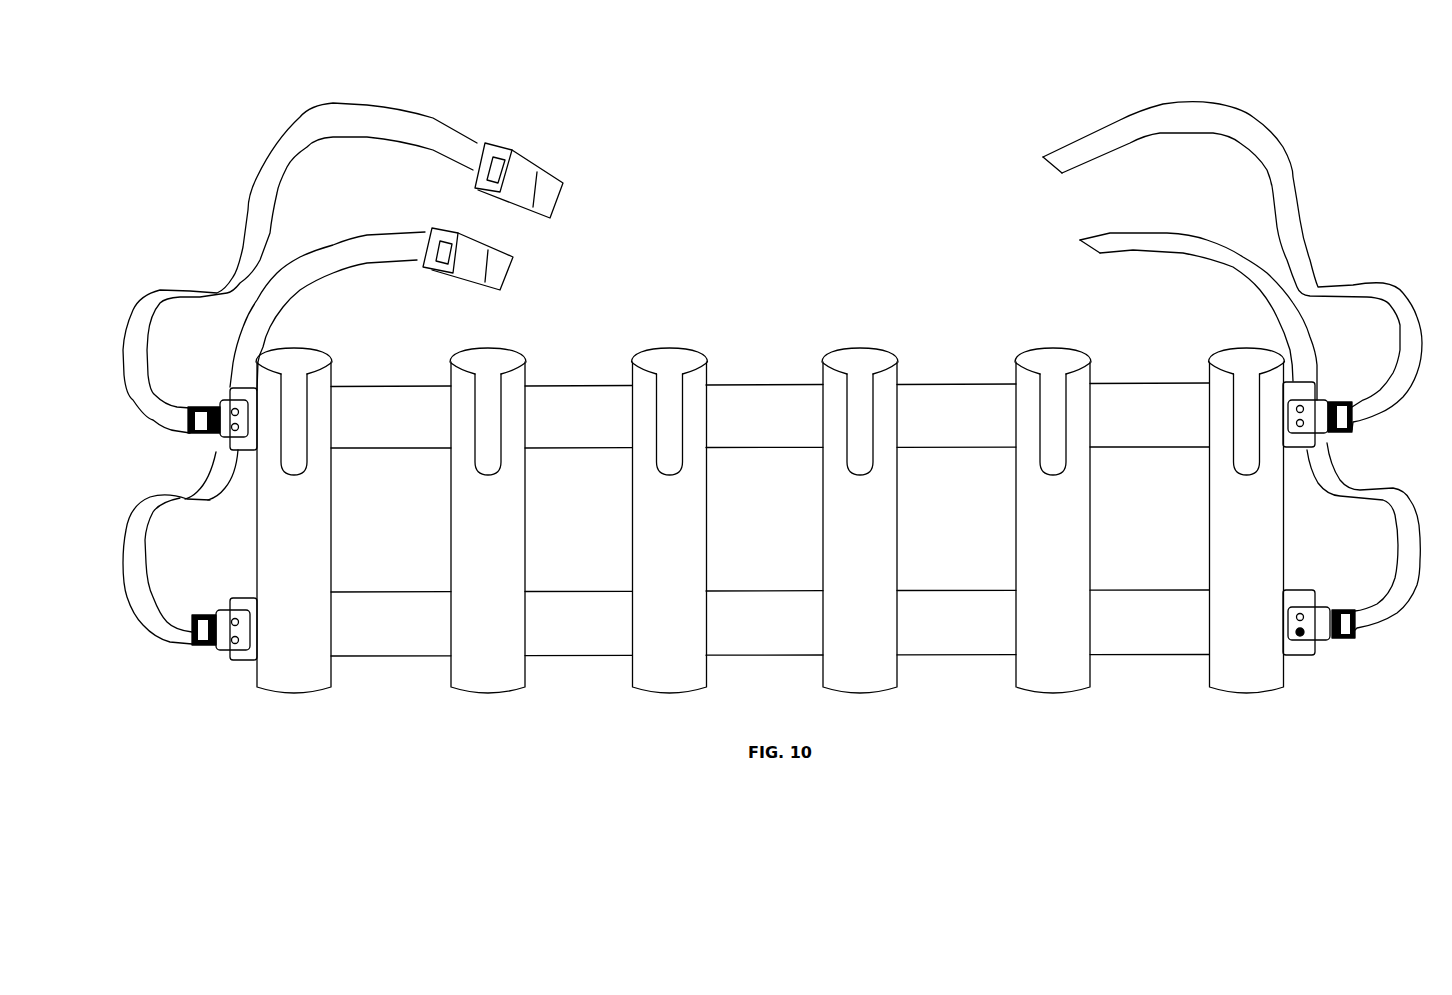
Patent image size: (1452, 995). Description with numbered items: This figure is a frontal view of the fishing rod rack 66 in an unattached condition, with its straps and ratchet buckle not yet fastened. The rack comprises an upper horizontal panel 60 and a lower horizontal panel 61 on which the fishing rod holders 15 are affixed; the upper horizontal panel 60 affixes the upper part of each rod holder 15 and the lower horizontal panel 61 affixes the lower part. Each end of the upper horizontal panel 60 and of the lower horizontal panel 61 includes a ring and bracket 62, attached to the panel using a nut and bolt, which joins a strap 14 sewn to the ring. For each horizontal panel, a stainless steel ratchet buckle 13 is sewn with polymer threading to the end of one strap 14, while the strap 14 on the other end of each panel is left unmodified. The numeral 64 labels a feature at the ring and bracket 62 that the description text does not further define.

The ratchet buckle 13 is at (531, 148).
The strap 14 is at (328, 96).
The fishing rod holder 15 is at (293, 703).
The upper horizontal panel 60 is at (783, 382).
The lower horizontal panel 61 is at (727, 661).
The ring and bracket 62 is at (211, 396).
The fastener holes 64 is at (224, 432).
The fishing rod rack 66 is at (772, 501).